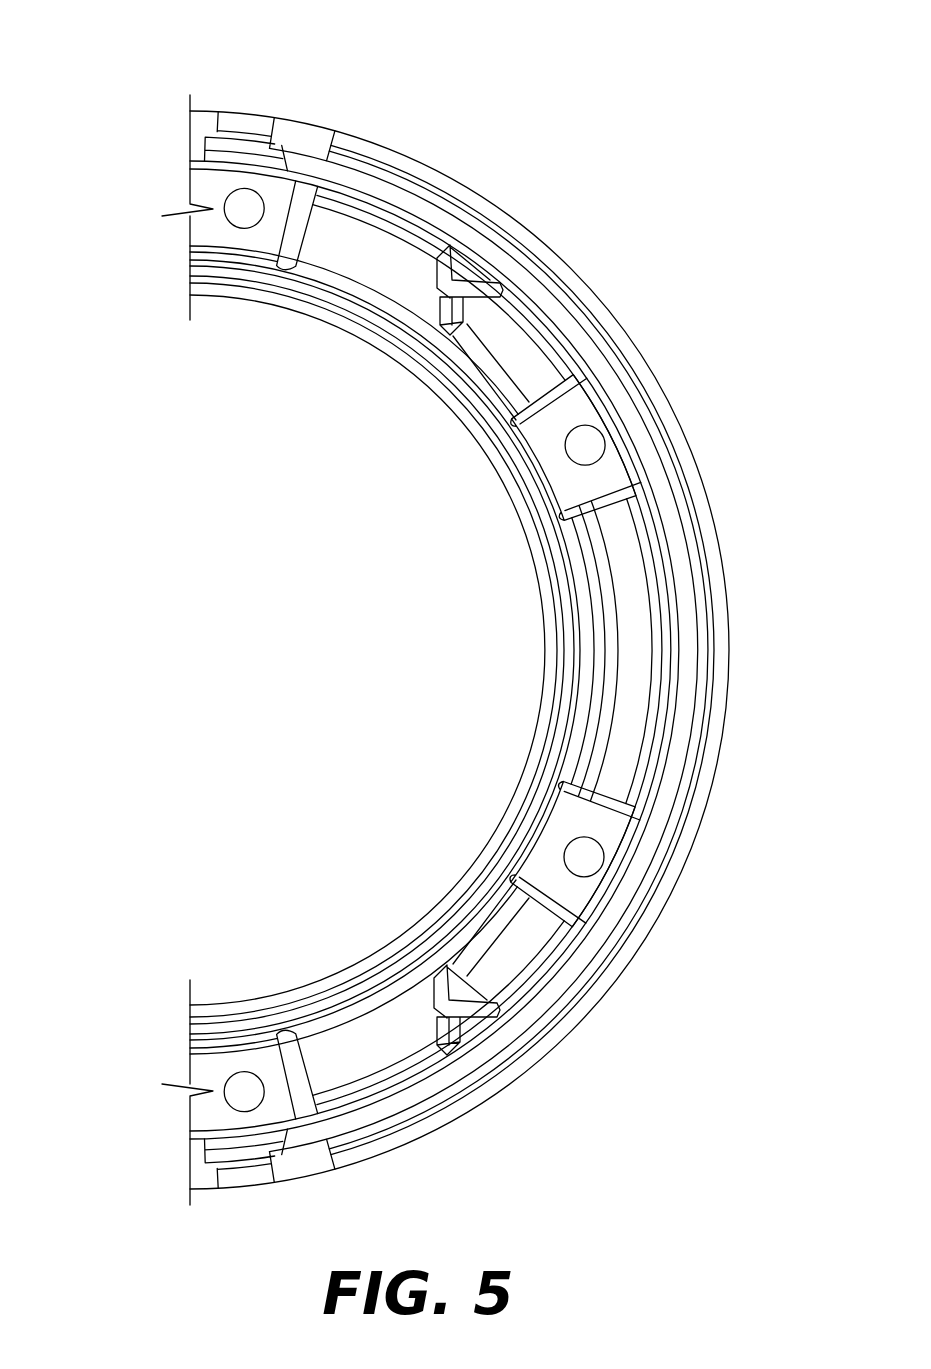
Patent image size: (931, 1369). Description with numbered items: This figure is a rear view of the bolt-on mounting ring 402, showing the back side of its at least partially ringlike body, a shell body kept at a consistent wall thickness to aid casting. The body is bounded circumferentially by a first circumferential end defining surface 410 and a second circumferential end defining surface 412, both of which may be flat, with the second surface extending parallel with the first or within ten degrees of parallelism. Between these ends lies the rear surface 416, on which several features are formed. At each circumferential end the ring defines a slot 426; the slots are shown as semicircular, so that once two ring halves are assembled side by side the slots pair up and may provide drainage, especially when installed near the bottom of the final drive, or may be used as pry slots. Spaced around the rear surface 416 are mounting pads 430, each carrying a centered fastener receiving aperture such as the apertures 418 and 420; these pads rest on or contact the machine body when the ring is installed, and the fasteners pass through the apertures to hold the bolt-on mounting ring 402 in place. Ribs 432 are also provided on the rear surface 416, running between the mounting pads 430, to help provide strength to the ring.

The bolt-on mounting ring 402 is at (461, 66).
The first circumferential end defining surface 410 is at (185, 201).
The second circumferential end defining surface 412 is at (185, 1118).
The rear surface 416 is at (360, 279).
The fastener receiving aperture 418 is at (254, 1001).
The fastener receiving aperture 420 is at (592, 858).
The slot 426 is at (198, 133).
The mounting pad 430 is at (203, 1084).
The rib 432 is at (625, 760).